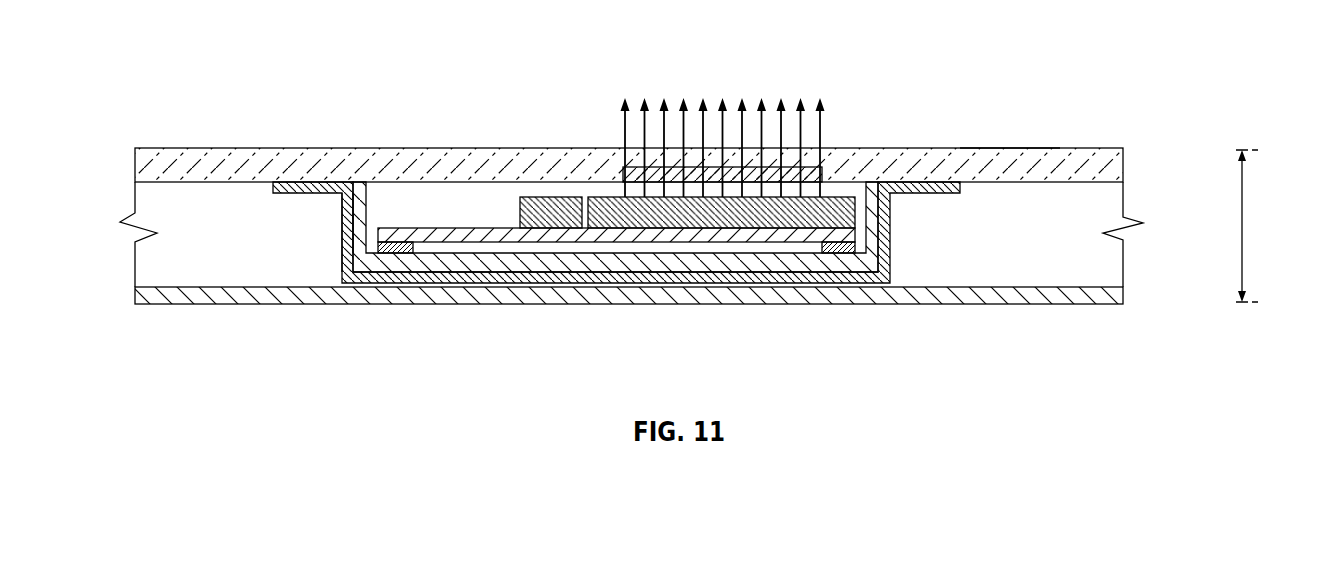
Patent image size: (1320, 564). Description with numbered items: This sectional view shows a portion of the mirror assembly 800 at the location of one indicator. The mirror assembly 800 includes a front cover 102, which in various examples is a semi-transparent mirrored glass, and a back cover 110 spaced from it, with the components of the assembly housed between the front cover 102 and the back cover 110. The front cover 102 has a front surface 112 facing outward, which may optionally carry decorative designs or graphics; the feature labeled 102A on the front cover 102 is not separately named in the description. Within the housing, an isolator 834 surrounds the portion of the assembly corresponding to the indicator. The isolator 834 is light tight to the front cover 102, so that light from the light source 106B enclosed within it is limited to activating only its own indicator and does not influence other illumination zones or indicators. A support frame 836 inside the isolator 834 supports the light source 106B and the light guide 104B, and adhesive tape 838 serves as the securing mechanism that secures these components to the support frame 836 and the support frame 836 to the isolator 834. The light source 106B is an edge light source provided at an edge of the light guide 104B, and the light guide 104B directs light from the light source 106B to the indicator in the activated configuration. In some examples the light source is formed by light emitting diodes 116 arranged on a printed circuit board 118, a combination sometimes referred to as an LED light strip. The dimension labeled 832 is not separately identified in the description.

The mirror assembly 800 is at (1022, 44).
The front cover 102 is at (1066, 166).
The window in top housing wall 102A is at (818, 162).
The front surface 112 is at (1007, 145).
The back cover 110 is at (853, 296).
The isolator 834 is at (872, 260).
The support frame 836 is at (362, 243).
The light source 106B is at (503, 236).
The printed circuit board 118 is at (460, 238).
The adhesive tape 838 is at (397, 252).
The light guide 104B is at (693, 223).
The light emitting diodes 116 is at (549, 204).
The bracket height dimension 832 is at (1238, 270).